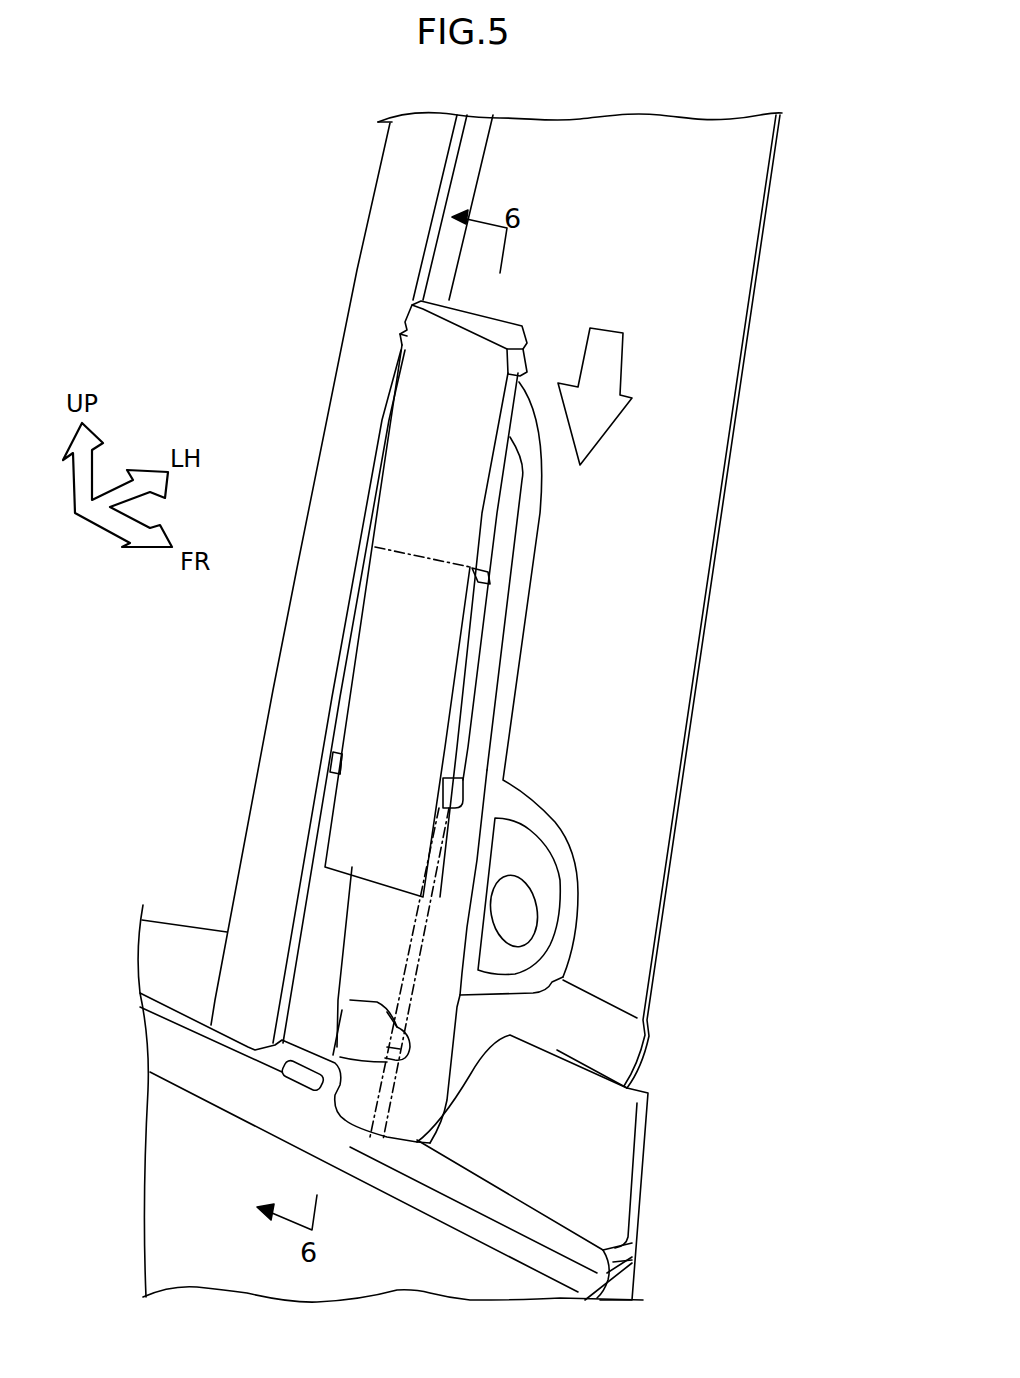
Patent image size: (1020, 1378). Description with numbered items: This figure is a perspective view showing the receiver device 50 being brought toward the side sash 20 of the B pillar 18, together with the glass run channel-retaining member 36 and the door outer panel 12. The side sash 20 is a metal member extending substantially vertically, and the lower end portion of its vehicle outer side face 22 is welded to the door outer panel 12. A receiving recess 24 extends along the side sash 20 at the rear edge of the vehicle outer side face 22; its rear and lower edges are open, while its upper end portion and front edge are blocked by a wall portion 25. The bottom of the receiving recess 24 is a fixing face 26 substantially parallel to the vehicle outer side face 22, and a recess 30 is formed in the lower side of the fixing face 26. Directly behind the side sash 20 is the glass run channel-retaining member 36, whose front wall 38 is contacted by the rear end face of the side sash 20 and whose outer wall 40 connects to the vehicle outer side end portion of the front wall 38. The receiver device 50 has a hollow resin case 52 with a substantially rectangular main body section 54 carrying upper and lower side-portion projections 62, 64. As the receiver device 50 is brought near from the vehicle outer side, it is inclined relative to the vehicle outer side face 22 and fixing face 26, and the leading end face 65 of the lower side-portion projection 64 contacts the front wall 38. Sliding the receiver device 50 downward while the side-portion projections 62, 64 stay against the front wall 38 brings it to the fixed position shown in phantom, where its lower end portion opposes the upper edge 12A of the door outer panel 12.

The door outer panel 12 is at (158, 1137).
The upper edge 12A is at (188, 1053).
The B pillar 18 is at (779, 275).
The side sash 20 is at (718, 383).
The vehicle outer side face 22 is at (748, 190).
The receiving recess 24 is at (505, 545).
The wall portion 25 is at (535, 493).
The fixing face 26 is at (483, 662).
The recess 30 is at (362, 1023).
The glass run channel-retaining member 36 is at (355, 375).
The front wall 38 is at (325, 915).
The outer wall 40 is at (248, 902).
The receiver device 50 is at (401, 691).
The case 52 is at (400, 462).
The main body section 54 is at (400, 510).
The side-portion projection 62 is at (400, 333).
The side-portion projection 64 is at (467, 790).
The leading end face 65 is at (337, 770).